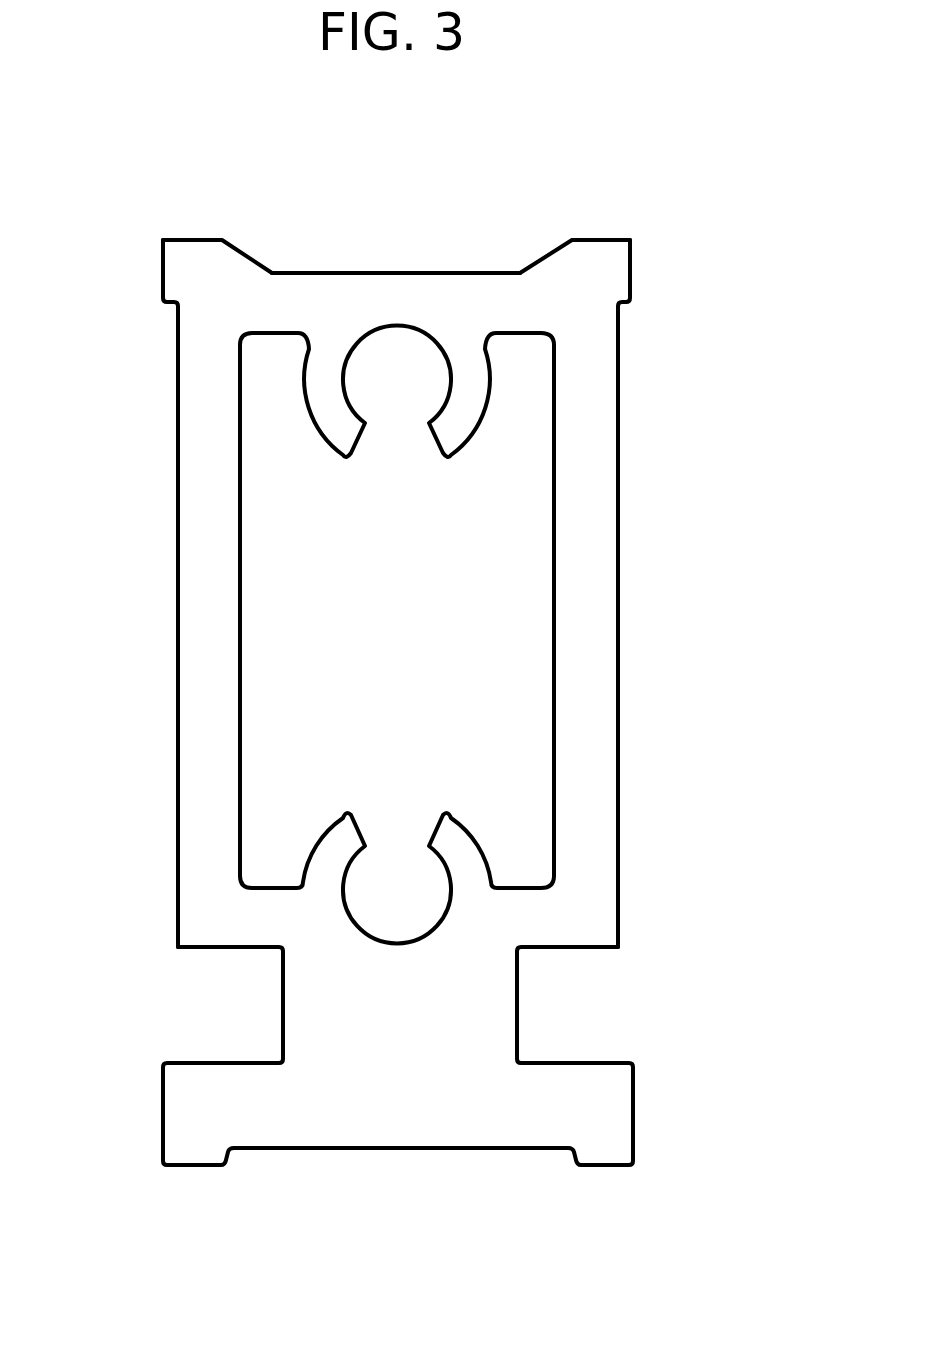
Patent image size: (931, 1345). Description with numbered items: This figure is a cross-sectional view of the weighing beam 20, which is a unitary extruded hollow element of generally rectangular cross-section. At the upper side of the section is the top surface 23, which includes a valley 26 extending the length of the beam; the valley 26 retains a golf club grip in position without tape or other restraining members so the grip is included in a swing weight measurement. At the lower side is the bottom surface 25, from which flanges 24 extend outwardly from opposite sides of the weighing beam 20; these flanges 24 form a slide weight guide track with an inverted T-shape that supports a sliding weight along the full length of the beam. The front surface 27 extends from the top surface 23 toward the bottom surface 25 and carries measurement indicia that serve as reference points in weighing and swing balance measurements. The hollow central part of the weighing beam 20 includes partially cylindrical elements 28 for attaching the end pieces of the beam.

The weighing beam 20 is at (693, 402).
The top surface 23 is at (388, 217).
The flanges 24 is at (163, 1124).
The bottom surface 25 is at (490, 1152).
The valley 26 is at (423, 270).
The front surface 27 is at (178, 739).
The screw boss slot 28 is at (395, 428).